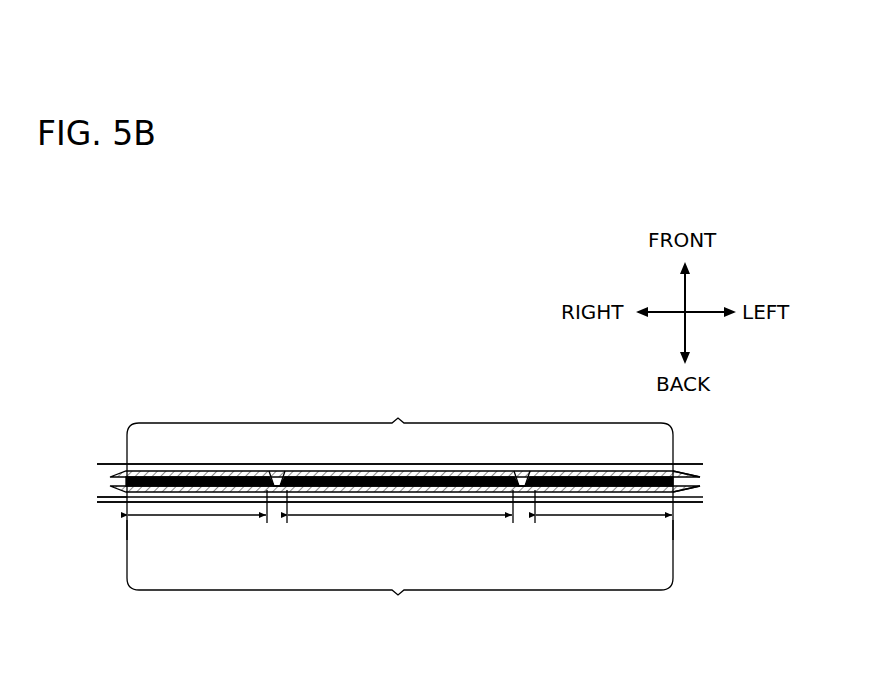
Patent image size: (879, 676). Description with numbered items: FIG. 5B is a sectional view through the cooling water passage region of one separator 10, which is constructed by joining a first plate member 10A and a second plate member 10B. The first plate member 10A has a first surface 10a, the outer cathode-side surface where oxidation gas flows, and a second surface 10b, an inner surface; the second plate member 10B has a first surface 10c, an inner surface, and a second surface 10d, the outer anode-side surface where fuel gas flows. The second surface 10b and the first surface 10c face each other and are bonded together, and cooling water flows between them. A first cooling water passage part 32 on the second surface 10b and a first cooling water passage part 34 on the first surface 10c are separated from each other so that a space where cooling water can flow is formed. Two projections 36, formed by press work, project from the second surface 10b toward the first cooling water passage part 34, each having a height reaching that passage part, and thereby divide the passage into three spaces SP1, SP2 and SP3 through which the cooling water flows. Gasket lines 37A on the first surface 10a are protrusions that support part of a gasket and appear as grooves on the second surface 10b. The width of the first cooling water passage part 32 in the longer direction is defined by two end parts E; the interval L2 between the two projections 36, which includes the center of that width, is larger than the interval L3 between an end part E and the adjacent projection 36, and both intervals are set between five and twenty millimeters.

The separator 10 is at (272, 393).
The first surface of the first plate member 10a is at (118, 479).
The second surface of the first plate member 10b is at (118, 485).
The first surface of the second plate member 10c is at (121, 474).
The second surface of the second plate member 10d is at (112, 499).
The first plate member 10A is at (703, 475).
The second plate member 10B is at (703, 487).
The first cooling water passage part 32 is at (400, 418).
The first cooling water passage part 34 is at (400, 600).
The projection 36 is at (277, 494).
The gasket line 37A is at (702, 464).
The space SP1 is at (222, 472).
The space SP2 is at (394, 472).
The space SP3 is at (597, 472).
The interval between two projections L2 is at (400, 530).
The interval between a projection and an end part L3 is at (400, 530).
The end part E is at (127, 530).